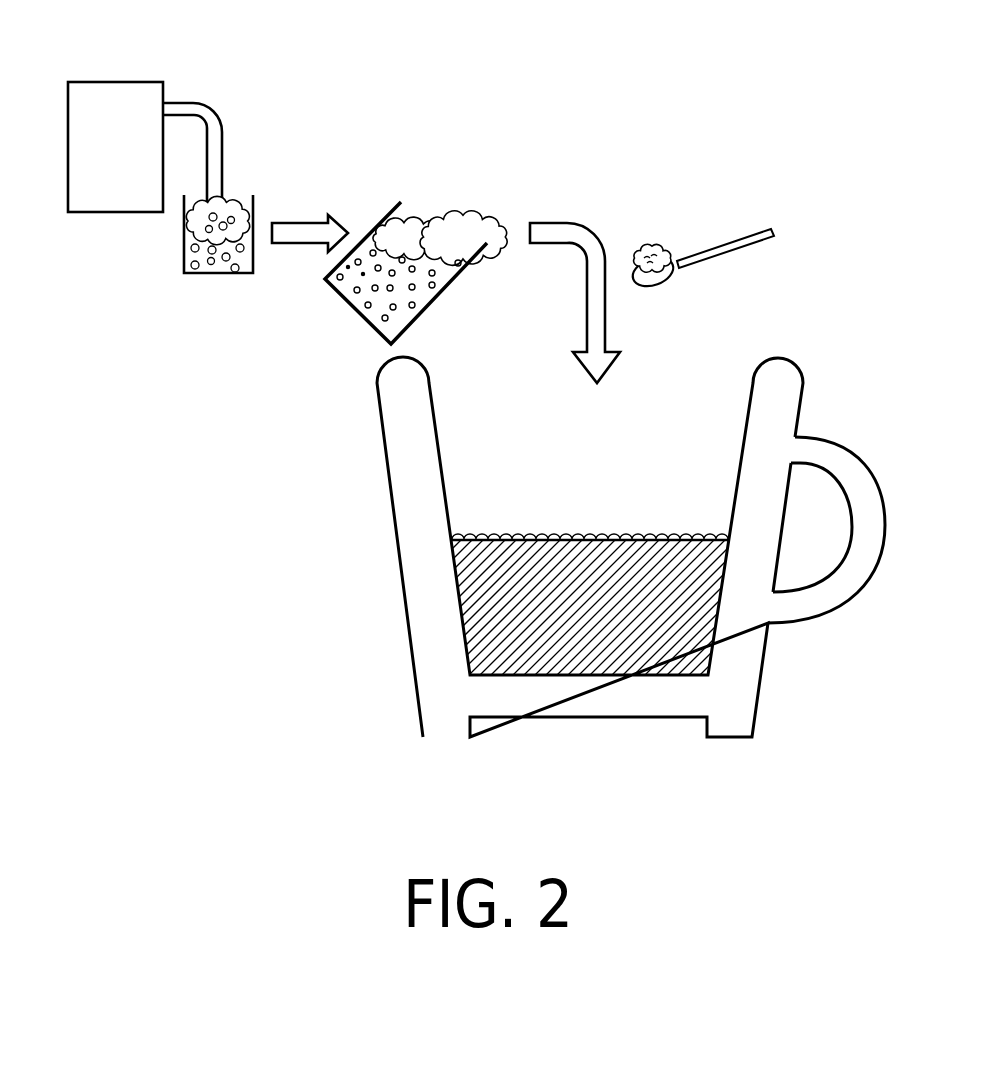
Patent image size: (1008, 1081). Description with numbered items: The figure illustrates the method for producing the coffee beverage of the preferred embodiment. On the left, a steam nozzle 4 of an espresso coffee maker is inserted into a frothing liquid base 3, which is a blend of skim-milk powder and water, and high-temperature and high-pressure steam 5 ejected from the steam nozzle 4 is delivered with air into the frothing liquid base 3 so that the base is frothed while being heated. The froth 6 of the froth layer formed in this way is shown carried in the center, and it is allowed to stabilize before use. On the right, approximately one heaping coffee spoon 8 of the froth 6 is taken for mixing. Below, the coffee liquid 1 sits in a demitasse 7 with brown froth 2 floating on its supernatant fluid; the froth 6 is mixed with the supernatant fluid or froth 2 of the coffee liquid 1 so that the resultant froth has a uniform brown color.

The coffee liquid 1 is at (690, 650).
The brown froth 2 is at (477, 533).
The frothing liquid base 3 is at (240, 211).
The steam nozzle 4 is at (202, 107).
The high-temperature and high-pressure steam 5 is at (208, 262).
The froth 6 is at (188, 227).
The demitasse 7 is at (790, 403).
The coffee spoon 8 is at (732, 243).